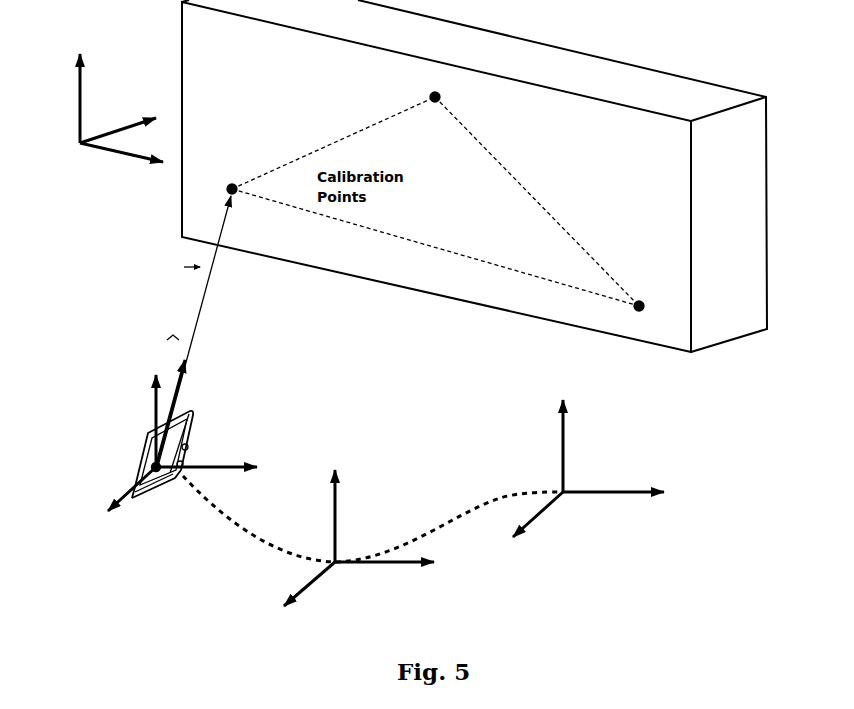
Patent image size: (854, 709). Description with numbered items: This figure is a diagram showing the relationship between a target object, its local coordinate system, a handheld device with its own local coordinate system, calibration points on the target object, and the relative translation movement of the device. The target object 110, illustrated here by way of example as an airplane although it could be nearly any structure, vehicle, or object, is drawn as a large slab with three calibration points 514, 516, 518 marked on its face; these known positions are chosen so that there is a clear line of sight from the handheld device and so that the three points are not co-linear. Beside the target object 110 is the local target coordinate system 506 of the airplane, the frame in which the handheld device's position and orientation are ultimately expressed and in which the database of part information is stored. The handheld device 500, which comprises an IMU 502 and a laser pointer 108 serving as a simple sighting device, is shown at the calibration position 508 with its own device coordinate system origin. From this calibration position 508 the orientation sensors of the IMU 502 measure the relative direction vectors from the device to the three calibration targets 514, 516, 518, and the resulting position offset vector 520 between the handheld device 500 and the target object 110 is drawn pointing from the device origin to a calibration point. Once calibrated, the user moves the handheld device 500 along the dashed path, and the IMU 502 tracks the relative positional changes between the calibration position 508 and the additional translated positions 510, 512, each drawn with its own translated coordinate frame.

The target object 110 is at (683, 78).
The local target coordinate system 506 is at (97, 140).
The calibration point 514 is at (428, 201).
The calibration point 516 is at (503, 188).
The calibration point 518 is at (648, 279).
The position offset vector 520 is at (251, 331).
The calibration position 508 is at (185, 457).
The laser pointer 108 is at (198, 429).
The handheld device 500 is at (190, 450).
The IMU 502 is at (184, 462).
The additional translated position 510 is at (359, 554).
The additional translated position 512 is at (588, 485).